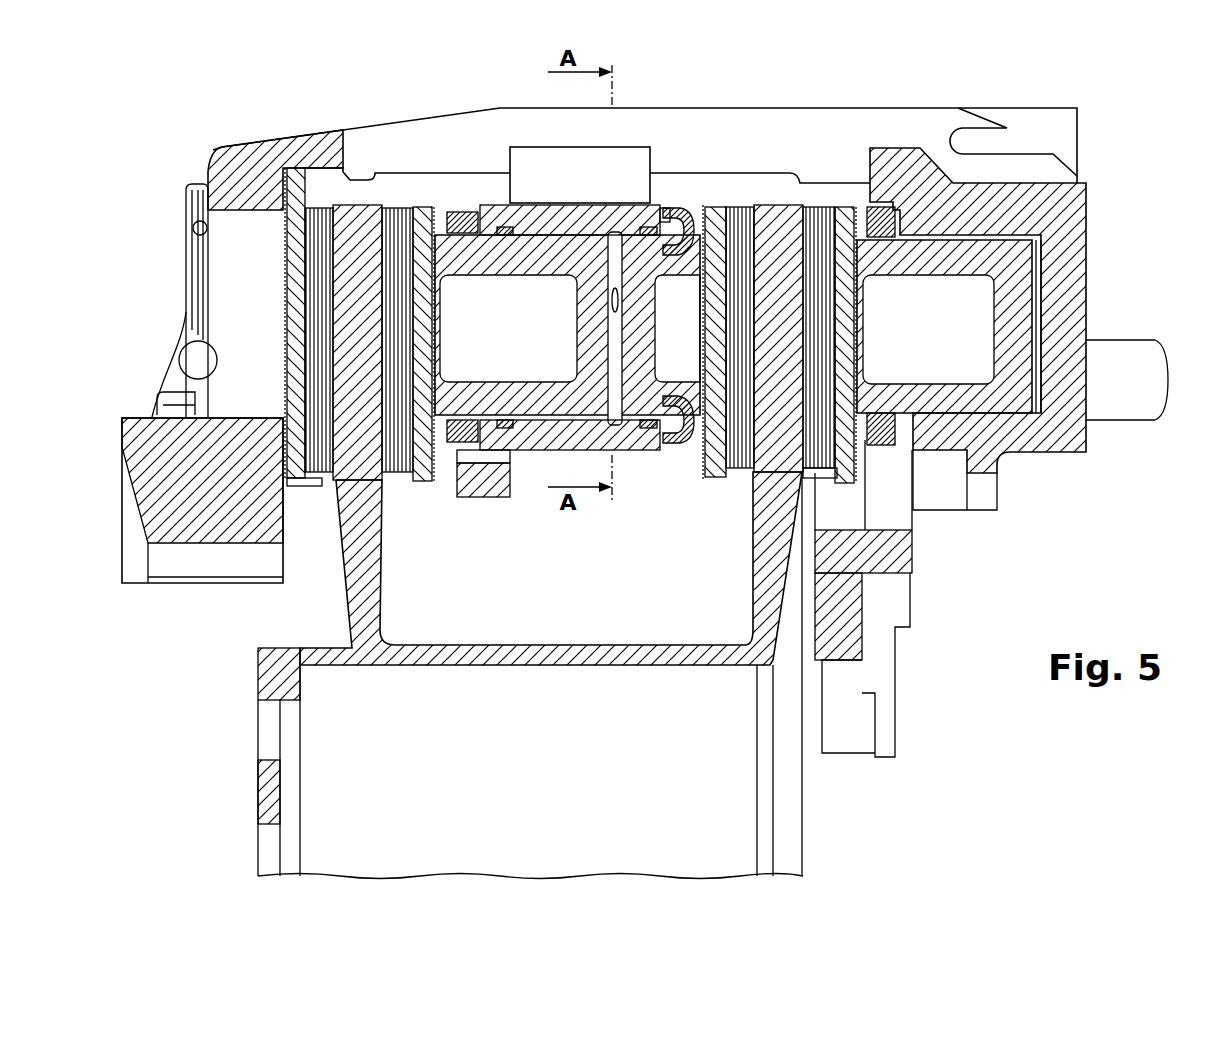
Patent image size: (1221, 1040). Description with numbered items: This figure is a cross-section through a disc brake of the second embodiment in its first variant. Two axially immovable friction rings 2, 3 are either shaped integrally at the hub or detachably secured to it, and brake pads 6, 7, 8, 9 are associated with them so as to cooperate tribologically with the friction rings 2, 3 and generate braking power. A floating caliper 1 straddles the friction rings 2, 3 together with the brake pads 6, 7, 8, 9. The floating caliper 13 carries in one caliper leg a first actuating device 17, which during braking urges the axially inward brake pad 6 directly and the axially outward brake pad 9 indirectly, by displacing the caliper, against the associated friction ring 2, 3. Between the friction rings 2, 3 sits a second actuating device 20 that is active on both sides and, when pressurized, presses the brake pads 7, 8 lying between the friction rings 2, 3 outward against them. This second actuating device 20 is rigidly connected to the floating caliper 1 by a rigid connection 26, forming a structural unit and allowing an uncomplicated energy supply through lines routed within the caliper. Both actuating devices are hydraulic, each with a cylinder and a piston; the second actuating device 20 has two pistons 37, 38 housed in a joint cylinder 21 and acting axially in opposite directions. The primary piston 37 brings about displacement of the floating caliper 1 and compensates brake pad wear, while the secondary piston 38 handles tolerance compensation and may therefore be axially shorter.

The floating caliper 1 is at (1028, 87).
The friction ring 2 is at (365, 585).
The friction ring 3 is at (780, 565).
The brake pad 6 is at (820, 213).
The brake pad 7 is at (718, 228).
The brake pad 8 is at (418, 228).
The brake pad 9 is at (320, 223).
The floating caliper 13 is at (1089, 200).
The first actuating device 17 is at (1000, 280).
The second actuating device 20 is at (522, 192).
The joint cylinder 21 is at (555, 438).
The rigid connection 26 is at (622, 150).
The primary piston 37 is at (535, 405).
The secondary piston 38 is at (648, 405).